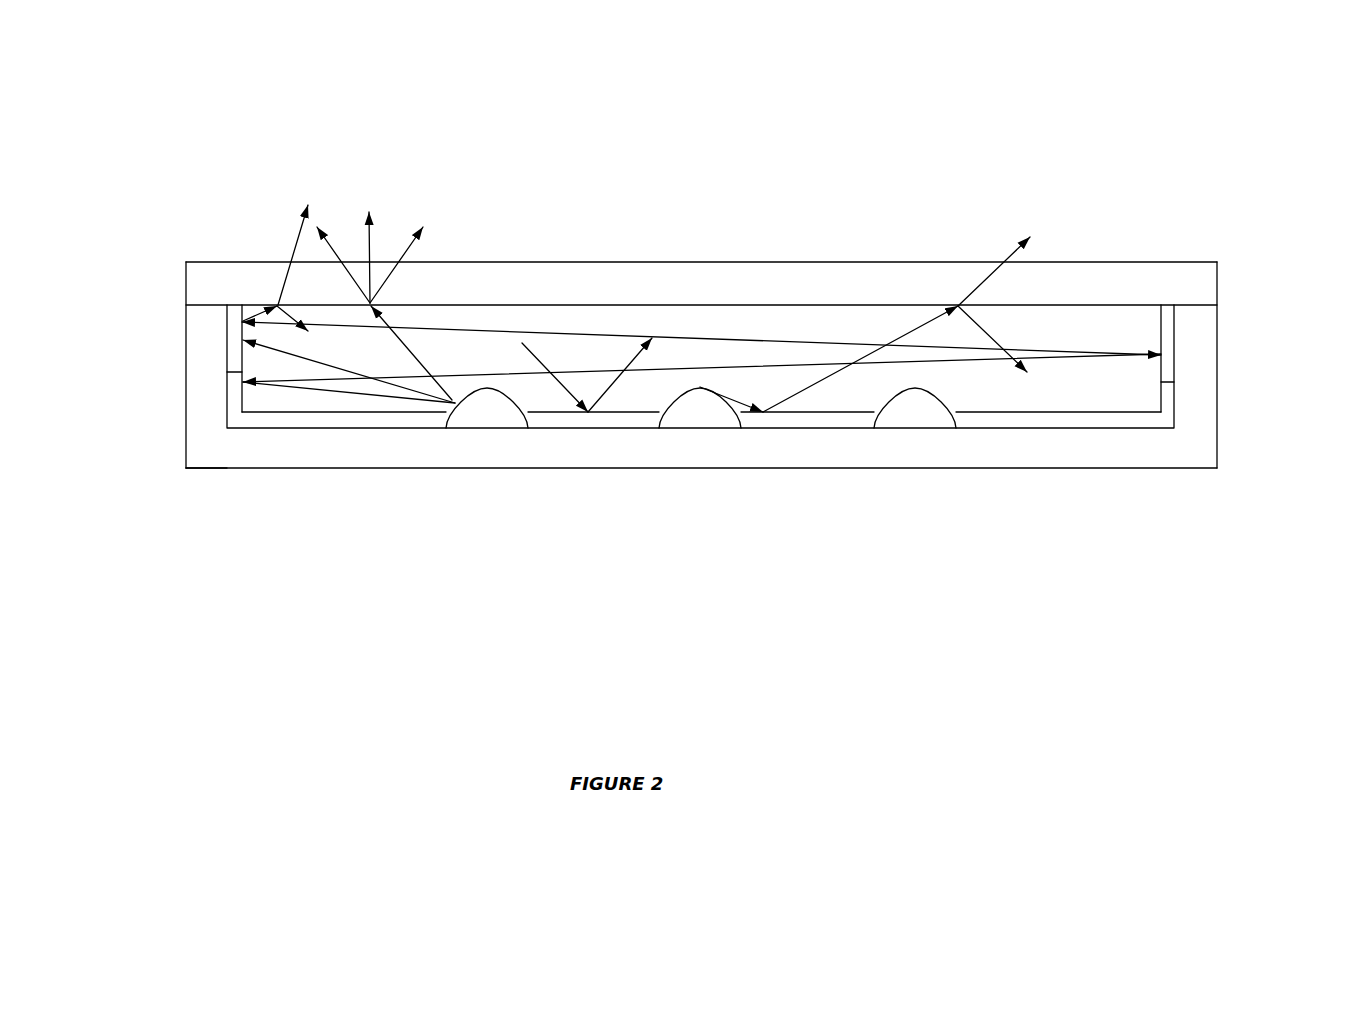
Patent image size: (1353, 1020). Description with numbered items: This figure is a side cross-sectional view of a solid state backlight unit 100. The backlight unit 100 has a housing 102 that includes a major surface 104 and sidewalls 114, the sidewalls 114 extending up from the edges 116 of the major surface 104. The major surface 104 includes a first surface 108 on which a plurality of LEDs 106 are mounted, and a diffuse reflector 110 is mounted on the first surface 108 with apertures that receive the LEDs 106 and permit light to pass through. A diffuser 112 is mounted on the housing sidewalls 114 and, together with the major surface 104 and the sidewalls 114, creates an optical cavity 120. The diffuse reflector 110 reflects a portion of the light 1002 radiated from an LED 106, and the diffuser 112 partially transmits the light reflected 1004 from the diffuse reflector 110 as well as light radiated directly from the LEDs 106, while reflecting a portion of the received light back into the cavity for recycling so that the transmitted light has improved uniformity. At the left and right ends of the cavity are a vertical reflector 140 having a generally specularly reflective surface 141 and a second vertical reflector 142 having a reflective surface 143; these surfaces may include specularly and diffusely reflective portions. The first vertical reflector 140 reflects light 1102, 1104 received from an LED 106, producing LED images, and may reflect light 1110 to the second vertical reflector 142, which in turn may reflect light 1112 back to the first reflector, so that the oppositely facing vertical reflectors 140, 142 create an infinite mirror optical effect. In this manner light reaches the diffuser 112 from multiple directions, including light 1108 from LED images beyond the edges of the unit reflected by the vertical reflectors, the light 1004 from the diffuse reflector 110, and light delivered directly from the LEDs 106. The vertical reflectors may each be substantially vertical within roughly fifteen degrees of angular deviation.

The backlight unit 100 is at (1193, 178).
The housing 102 is at (1217, 328).
The major surface 104 is at (952, 447).
The LED 106 is at (700, 408).
The first surface 108 is at (637, 430).
The diffuse reflector 110 is at (808, 418).
The diffuser 112 is at (558, 283).
The sidewall 114 is at (207, 333).
The edge 116 is at (195, 438).
The optical cavity 120 is at (887, 332).
The vertical reflector 140 is at (235, 317).
The specularly reflective surface 141 is at (245, 372).
The vertical reflector 142 is at (1167, 332).
The reflective surface 143 is at (1162, 382).
The light 1002 is at (733, 412).
The reflected light 1004 is at (879, 414).
The light 1102 is at (393, 384).
The light 1104 is at (415, 402).
The light 1108 is at (261, 312).
The light 1110 is at (595, 372).
The light 1112 is at (1027, 350).